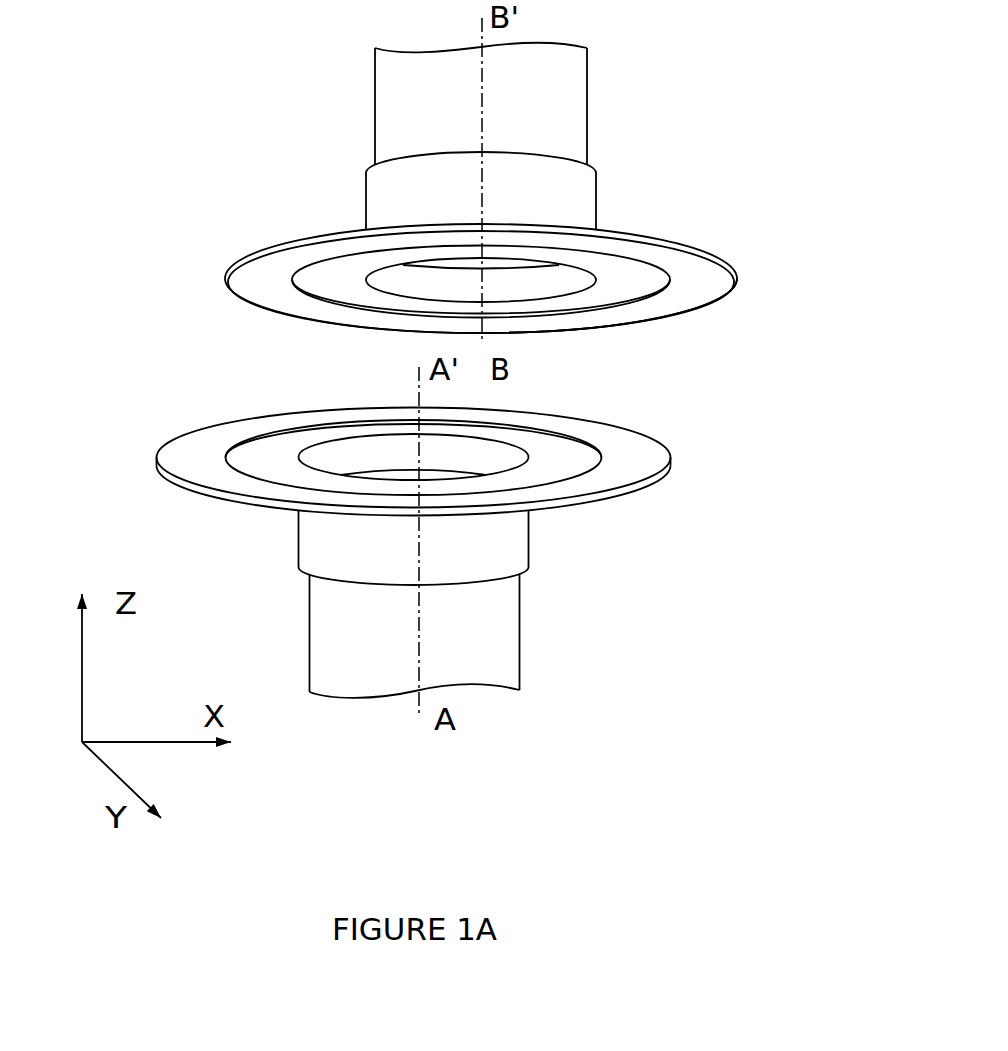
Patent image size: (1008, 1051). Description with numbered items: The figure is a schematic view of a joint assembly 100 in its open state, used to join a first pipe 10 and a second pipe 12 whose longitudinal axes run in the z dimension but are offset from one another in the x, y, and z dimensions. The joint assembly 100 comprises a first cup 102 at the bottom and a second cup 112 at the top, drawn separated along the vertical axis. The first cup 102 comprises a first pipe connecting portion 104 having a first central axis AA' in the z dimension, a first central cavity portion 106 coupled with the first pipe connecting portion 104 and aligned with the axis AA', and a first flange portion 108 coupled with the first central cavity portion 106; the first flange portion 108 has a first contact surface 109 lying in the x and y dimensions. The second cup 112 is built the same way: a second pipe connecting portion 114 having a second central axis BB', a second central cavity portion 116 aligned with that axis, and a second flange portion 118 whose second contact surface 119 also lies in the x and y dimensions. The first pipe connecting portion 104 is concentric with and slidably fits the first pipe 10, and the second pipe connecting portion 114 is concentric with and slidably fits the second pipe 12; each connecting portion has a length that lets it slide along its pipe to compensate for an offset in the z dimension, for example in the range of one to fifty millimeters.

The joint assembly 100 is at (207, 116).
The second pipe 12 is at (589, 117).
The second cup 112 is at (731, 166).
The second pipe connecting portion 114 is at (596, 205).
The second central cavity portion 116 is at (626, 275).
The second flange portion 118 is at (738, 272).
The second contact surface 119 is at (691, 296).
The first cup 102 is at (609, 538).
The first pipe connecting portion 104 is at (509, 533).
The first central cavity portion 106 is at (538, 463).
The first flange portion 108 is at (668, 479).
The first contact surface 109 is at (634, 454).
The first pipe 10 is at (521, 669).